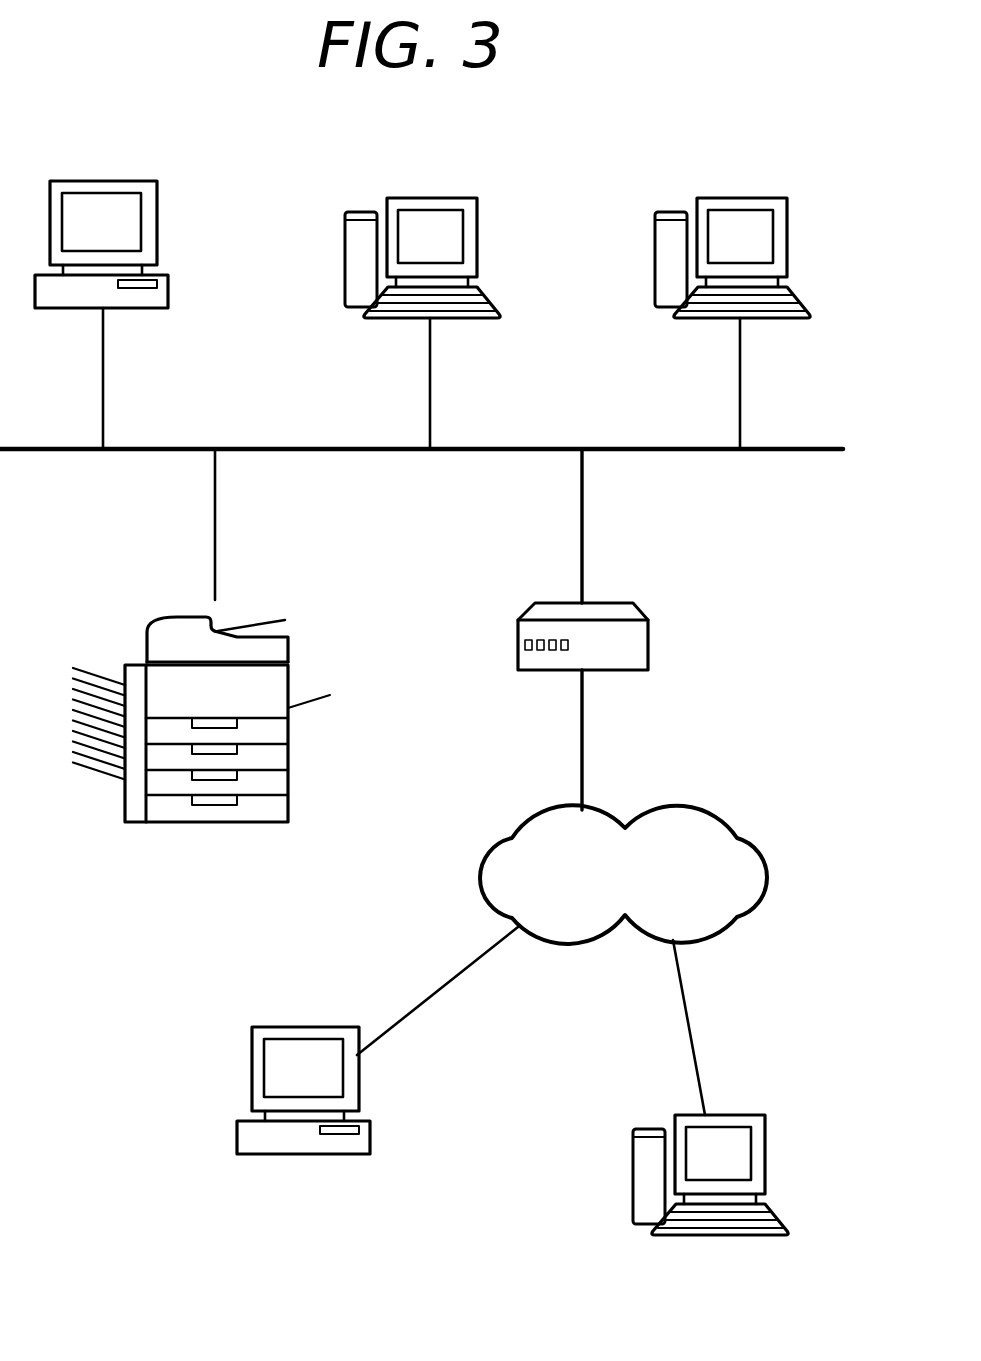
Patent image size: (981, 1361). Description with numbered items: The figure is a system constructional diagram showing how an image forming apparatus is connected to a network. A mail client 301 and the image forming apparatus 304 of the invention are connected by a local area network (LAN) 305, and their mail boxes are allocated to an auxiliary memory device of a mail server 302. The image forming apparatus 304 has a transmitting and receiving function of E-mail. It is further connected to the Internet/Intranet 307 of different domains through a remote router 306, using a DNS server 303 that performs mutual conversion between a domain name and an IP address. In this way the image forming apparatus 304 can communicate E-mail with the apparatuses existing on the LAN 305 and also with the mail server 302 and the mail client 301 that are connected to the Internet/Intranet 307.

The mail client 301 is at (290, 645).
The mail server 302 is at (157, 205).
The DNS server 303 is at (478, 218).
The image forming apparatus 304 is at (788, 218).
The local area network (LAN) 305 is at (800, 447).
The remote router 306 is at (650, 632).
The Internet/Intranet 307 is at (713, 812).